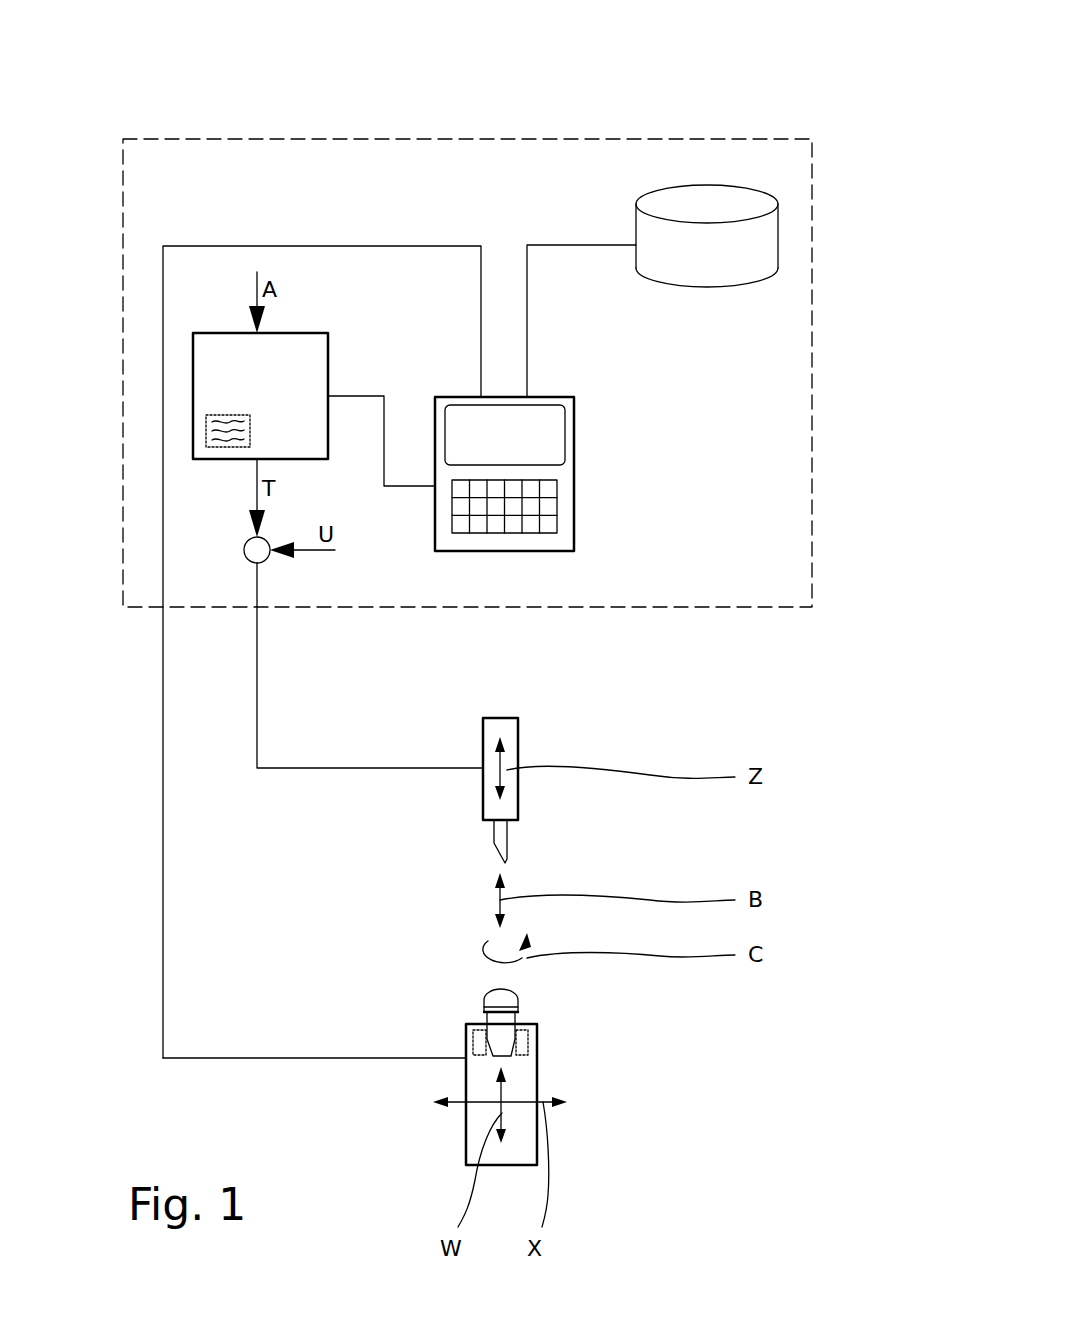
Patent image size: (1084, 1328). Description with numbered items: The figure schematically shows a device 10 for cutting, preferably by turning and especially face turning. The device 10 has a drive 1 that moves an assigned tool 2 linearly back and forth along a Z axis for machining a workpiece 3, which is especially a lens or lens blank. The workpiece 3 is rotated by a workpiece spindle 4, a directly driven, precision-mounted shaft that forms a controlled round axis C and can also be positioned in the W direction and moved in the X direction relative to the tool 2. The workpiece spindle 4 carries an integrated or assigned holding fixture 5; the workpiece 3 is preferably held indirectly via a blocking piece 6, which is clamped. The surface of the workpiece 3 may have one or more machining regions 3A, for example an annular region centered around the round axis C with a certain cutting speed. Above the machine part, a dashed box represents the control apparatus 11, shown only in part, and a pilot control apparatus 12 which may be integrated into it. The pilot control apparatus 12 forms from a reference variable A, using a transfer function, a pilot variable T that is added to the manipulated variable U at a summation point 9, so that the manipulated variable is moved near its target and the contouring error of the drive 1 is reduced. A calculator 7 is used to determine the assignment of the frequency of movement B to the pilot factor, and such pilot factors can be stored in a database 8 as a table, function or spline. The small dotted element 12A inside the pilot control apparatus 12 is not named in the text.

The drive 1 is at (512, 733).
The tool 2 is at (507, 845).
The workpiece 3 is at (508, 998).
The machining region 3A is at (472, 982).
The workpiece spindle 4 is at (537, 1067).
The holding fixture 5 is at (507, 1010).
The blocking piece 6 is at (523, 1040).
The calculator 7 is at (574, 473).
The database 8 is at (695, 287).
The summation point 9 is at (244, 553).
The device 10 is at (88, 110).
The control apparatus 11 is at (206, 139).
The pilot control apparatus 12 is at (328, 352).
The filter 12A is at (206, 431).